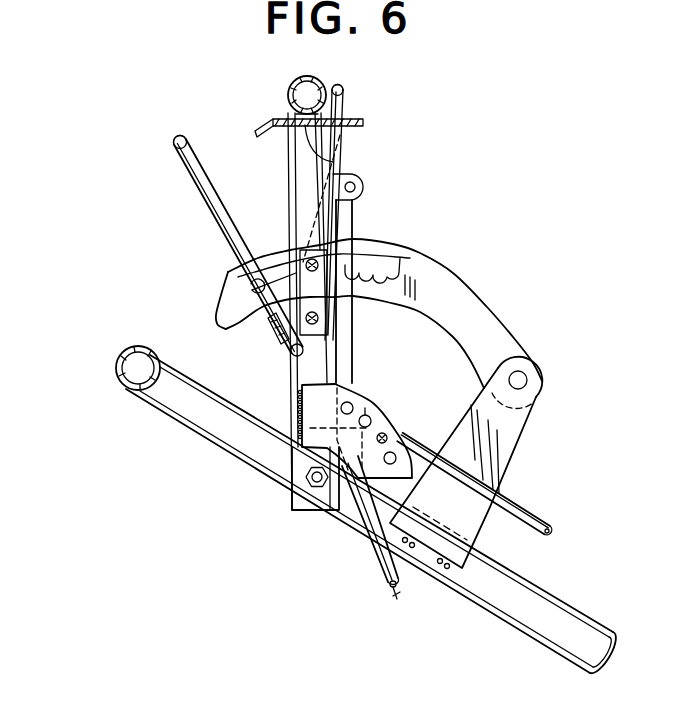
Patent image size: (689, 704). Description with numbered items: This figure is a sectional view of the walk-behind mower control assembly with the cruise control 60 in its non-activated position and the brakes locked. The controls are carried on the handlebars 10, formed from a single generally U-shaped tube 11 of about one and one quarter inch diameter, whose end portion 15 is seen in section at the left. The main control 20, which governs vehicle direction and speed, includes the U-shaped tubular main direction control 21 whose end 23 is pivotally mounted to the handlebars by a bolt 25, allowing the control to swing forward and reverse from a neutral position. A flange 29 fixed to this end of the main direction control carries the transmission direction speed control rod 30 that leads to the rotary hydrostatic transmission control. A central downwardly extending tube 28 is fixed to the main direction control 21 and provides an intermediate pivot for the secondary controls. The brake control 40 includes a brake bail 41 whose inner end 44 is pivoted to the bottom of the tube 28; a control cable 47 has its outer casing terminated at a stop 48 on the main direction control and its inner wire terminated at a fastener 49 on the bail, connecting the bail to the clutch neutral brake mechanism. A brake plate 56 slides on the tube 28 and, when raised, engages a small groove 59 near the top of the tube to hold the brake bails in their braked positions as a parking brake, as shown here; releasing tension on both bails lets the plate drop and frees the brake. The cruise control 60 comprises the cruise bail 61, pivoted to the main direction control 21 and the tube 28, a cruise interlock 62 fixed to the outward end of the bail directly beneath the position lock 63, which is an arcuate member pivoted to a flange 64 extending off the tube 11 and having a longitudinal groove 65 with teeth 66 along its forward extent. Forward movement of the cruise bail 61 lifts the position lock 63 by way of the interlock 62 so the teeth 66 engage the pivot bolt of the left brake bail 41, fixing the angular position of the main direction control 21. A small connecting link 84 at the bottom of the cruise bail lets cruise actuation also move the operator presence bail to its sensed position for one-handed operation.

The handlebars 10 is at (110, 353).
The tube 11 is at (528, 628).
The tube end 15 is at (118, 380).
The main control 20 is at (325, 73).
The main direction control 21 is at (296, 80).
The end of main direction control 23 is at (300, 510).
The bolt 25 is at (306, 478).
The tube 28 is at (297, 158).
The flange 29 is at (390, 410).
The transmission direction speed control rod 30 is at (545, 515).
The brake control 40 is at (352, 92).
The brake bail 41 is at (345, 86).
The inner end of brake bail 44 is at (303, 247).
The control cable 47 is at (372, 562).
The stop 48 is at (296, 407).
The fastener 49 is at (364, 190).
The brake plate 56 is at (365, 123).
The groove 59 is at (338, 149).
The cruise control 60 is at (176, 131).
The cruise bail 61 is at (174, 139).
The cruise interlock 62 is at (270, 340).
The position lock 63 is at (223, 298).
The flange 64 is at (512, 437).
The groove 65 is at (228, 270).
The teeth 66 is at (398, 252).
The connecting link 84 is at (305, 349).